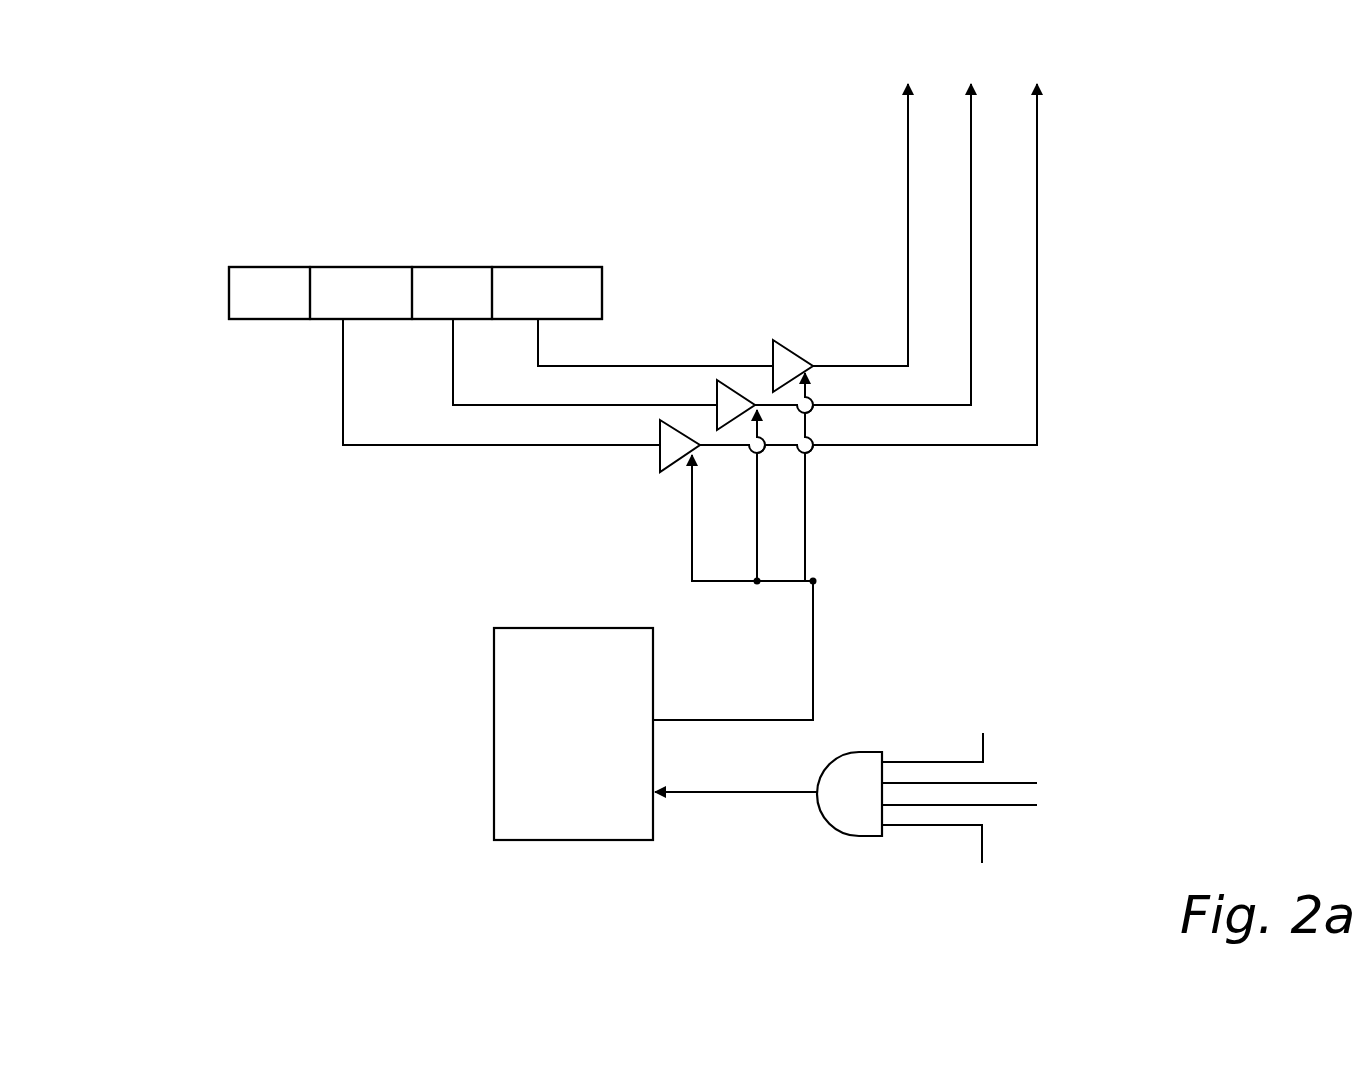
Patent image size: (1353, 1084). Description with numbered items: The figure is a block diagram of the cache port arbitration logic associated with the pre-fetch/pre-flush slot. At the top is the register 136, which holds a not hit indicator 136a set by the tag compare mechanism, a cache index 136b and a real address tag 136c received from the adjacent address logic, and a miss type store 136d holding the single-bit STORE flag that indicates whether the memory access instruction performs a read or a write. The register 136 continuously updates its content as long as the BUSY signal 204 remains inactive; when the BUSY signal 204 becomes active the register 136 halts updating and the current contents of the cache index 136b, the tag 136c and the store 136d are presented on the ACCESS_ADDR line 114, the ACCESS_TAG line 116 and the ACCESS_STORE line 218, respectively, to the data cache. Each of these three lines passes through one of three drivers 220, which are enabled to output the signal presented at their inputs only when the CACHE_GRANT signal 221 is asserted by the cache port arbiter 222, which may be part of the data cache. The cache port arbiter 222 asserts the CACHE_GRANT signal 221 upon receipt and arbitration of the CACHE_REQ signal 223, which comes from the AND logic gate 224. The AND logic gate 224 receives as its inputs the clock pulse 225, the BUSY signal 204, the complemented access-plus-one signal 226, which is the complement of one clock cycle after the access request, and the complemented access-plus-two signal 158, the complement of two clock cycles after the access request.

The register 136 is at (229, 288).
The not hit (~HIT) indicator 136a is at (284, 316).
The cache index 136b is at (323, 277).
The real address tag (TAG) 136c is at (458, 272).
The miss type store 136d is at (555, 273).
The ACCESS_STORE 218 is at (540, 351).
The ACCESS_TAG 116 is at (475, 404).
The ACCESS_ADDR 114 is at (378, 443).
The drivers 220 is at (792, 360).
The CACHE_GRANT signal 221 is at (725, 721).
The cache port arbiter 222 is at (540, 645).
The CACHE_REQ signal 223 is at (725, 793).
The AND logic gate 224 is at (857, 770).
The clock pulse 225 is at (987, 747).
The BUSY signal 204 is at (997, 782).
The ~ACCESS+1 226 is at (998, 806).
The ~ACCESS+2 158 is at (982, 858).